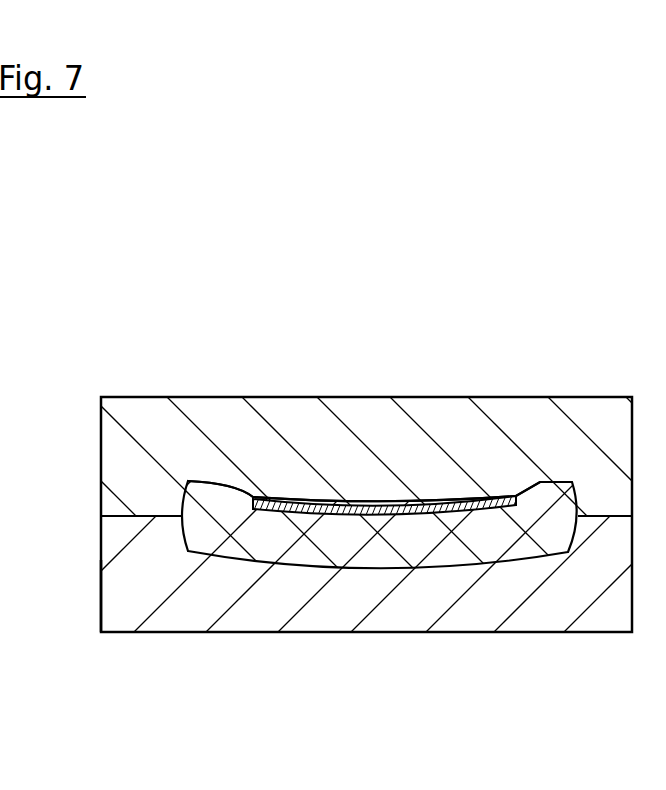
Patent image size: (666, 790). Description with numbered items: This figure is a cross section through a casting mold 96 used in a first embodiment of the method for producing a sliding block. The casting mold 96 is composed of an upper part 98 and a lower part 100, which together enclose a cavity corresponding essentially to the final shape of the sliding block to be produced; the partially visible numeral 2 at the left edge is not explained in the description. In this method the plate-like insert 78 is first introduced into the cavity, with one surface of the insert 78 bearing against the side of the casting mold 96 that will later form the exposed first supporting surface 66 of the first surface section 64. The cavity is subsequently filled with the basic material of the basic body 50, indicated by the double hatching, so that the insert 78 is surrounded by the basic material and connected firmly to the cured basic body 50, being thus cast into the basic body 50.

The mold (partially visible numeral) 2 is at (50, 596).
The basic body 50 is at (288, 578).
The first surface section 64 is at (388, 420).
The first supporting surface 66 is at (362, 497).
The plate-like insert 78 is at (398, 483).
The casting mold 96 is at (178, 384).
The upper part 98 is at (562, 438).
The lower part 100 is at (558, 605).